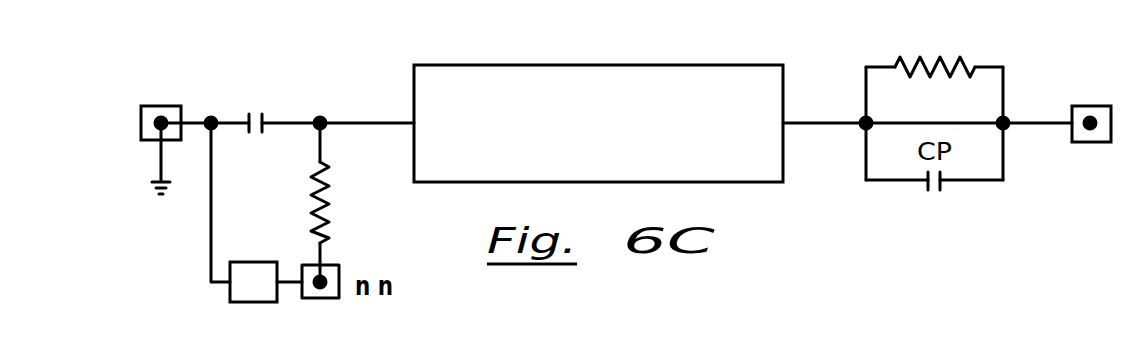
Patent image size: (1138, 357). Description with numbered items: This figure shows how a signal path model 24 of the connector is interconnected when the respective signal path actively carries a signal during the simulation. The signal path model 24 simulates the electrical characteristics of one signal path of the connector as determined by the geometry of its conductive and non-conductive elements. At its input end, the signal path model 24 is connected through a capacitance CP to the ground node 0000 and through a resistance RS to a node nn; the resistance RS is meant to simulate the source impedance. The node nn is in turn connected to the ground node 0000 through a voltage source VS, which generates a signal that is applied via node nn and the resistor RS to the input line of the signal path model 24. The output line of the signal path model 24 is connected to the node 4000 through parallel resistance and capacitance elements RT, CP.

The signal path model 24 is at (632, 65).
The ground node 0000 is at (162, 100).
The node 4000 is at (1085, 102).
The capacitance CP is at (252, 101).
The resistance RS is at (339, 202).
The voltage source VS is at (253, 282).
The resistance RT is at (935, 51).